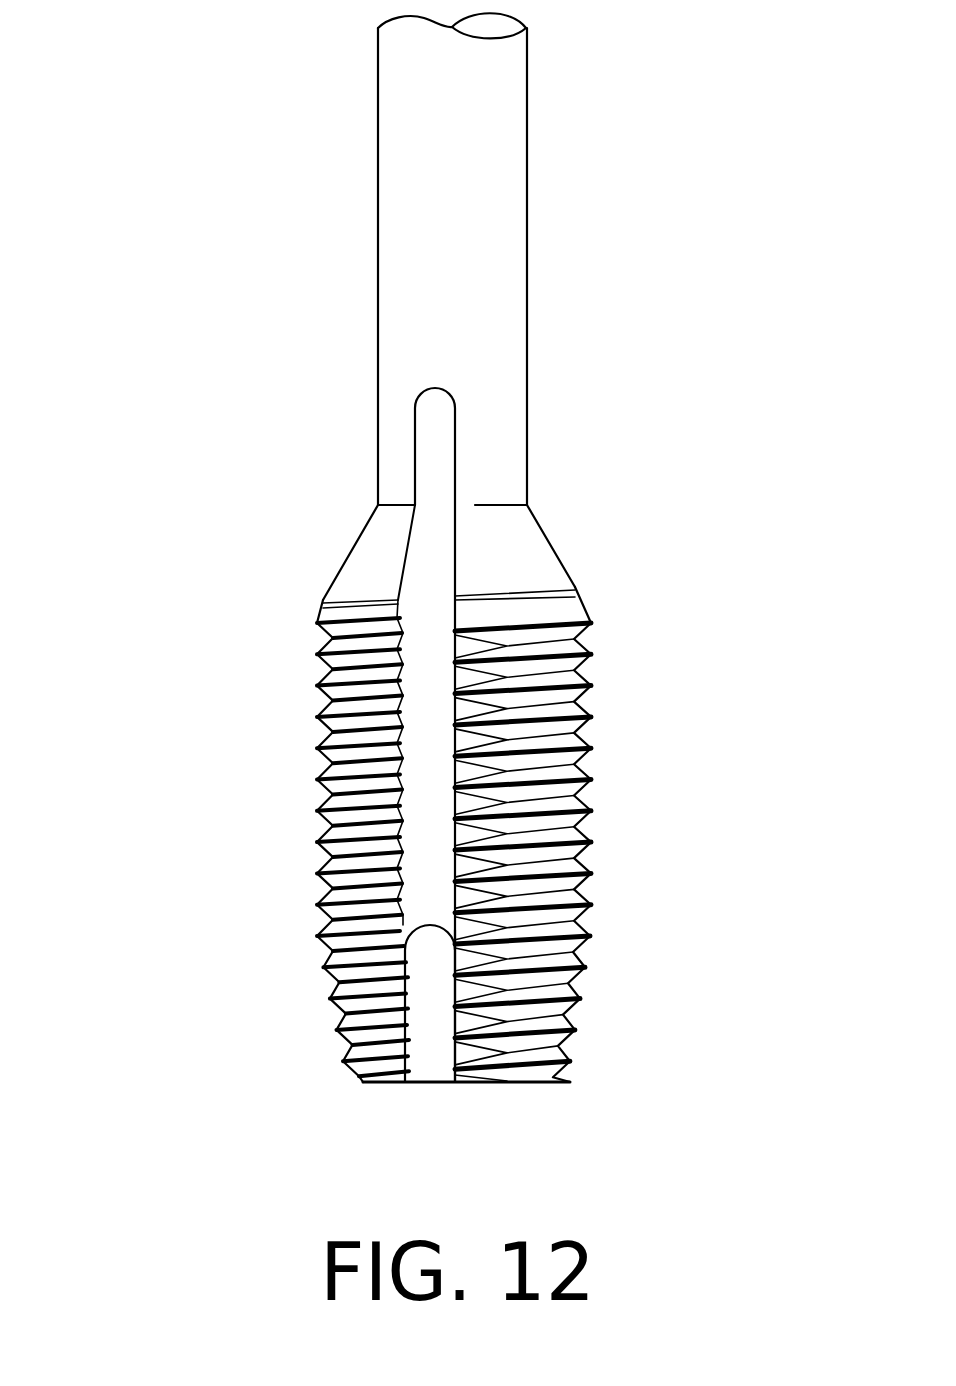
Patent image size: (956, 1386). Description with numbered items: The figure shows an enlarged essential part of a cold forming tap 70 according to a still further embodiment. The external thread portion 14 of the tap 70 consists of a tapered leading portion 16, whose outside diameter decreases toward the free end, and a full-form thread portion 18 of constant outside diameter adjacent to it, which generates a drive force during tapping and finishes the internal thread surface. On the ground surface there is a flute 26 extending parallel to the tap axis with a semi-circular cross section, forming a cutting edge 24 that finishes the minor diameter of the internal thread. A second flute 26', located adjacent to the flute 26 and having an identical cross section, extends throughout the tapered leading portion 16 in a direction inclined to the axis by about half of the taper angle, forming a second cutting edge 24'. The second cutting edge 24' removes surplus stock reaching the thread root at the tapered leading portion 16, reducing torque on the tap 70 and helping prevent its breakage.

The cold forming tap 70 is at (707, 132).
The external thread portion 14 is at (170, 737).
The full-form thread portion 18 is at (284, 600).
The tapered leading portion 16 is at (284, 957).
The cutting edge 24 is at (528, 791).
The flute 26 is at (371, 656).
The second cutting edge 24' is at (468, 1057).
The second flute 26' is at (387, 1035).